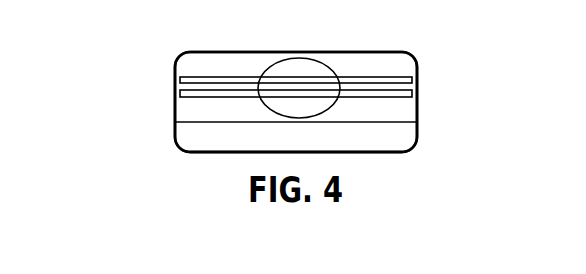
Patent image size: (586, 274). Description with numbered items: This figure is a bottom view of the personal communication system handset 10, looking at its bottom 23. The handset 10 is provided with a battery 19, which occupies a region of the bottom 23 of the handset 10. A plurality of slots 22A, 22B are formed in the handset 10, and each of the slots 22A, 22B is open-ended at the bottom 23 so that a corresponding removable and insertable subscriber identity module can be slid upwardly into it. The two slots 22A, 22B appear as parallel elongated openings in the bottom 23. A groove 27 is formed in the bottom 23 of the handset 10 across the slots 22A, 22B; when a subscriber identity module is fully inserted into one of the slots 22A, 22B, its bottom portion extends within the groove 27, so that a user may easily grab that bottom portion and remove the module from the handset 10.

The personal communication system handset 10 is at (175, 130).
The bottom 23 is at (175, 70).
The battery 19 is at (412, 135).
The groove 27 is at (323, 77).
The slot 22A is at (417, 81).
The slot 22B is at (417, 95).